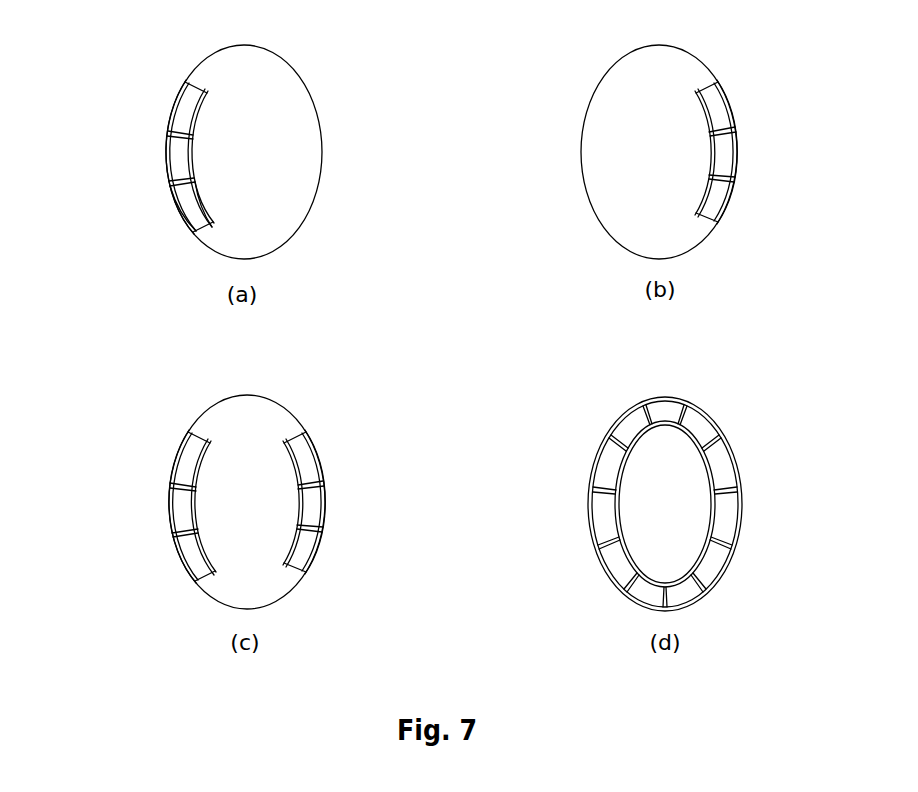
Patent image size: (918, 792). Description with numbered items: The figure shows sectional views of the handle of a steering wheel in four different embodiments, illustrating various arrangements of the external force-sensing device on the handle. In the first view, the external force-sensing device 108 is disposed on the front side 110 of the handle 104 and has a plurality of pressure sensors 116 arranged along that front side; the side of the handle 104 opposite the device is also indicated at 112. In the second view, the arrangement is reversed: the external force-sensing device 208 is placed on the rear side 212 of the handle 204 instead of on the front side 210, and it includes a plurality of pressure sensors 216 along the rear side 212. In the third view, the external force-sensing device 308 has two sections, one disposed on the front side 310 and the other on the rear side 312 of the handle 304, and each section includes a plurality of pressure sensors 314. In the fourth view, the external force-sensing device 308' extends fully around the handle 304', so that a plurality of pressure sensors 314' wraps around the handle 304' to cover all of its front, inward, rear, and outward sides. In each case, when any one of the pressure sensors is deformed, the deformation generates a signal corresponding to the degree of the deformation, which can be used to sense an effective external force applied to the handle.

The handle 104 is at (247, 145).
The external force-sensing device 108 is at (177, 135).
The front side 110 is at (180, 200).
The ring body 112 is at (322, 157).
The pressure sensors 116 is at (180, 155).
The handle 204 is at (658, 145).
The external force-sensing device 208 is at (733, 183).
The front side 210 is at (578, 150).
The rear side 212 is at (737, 150).
The pressure sensors 216 is at (713, 110).
The handle 304 is at (280, 492).
The external force-sensing device 308 is at (265, 580).
The front side 310 is at (188, 457).
The rear side 312 is at (300, 470).
The pressure sensors 314 is at (247, 512).
The handle 304' is at (718, 497).
The external force-sensing device 308' is at (547, 475).
The pressure sensors 314' is at (766, 569).